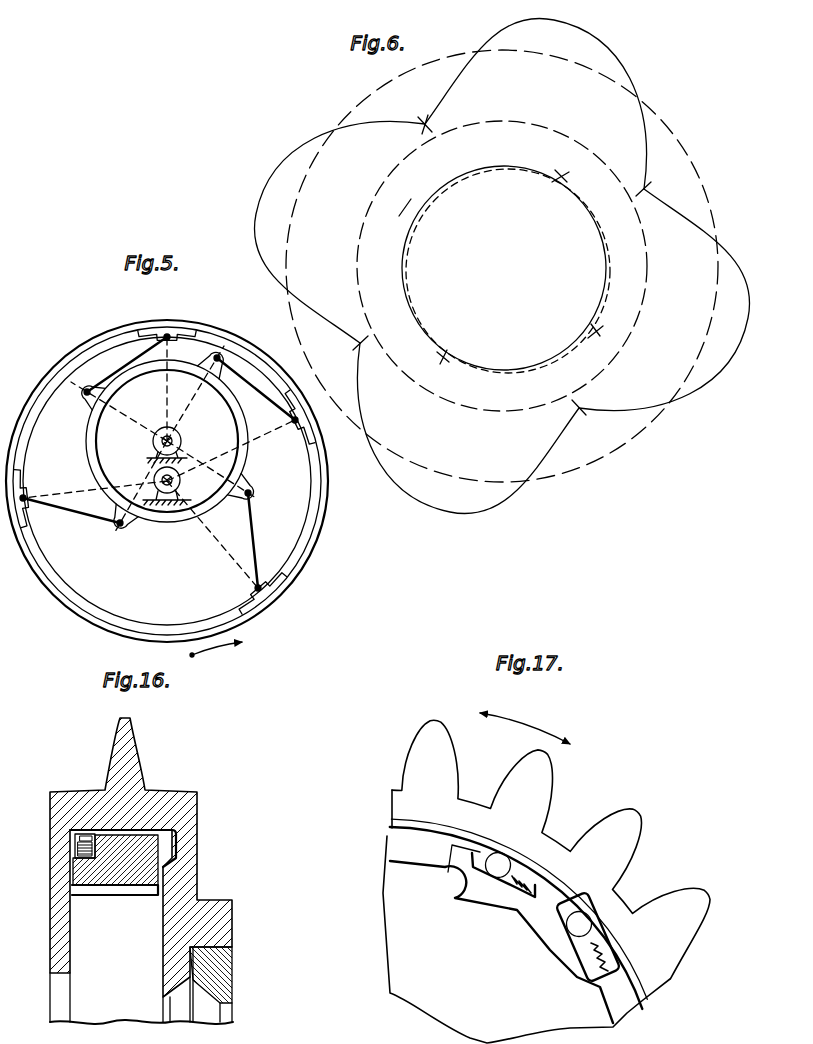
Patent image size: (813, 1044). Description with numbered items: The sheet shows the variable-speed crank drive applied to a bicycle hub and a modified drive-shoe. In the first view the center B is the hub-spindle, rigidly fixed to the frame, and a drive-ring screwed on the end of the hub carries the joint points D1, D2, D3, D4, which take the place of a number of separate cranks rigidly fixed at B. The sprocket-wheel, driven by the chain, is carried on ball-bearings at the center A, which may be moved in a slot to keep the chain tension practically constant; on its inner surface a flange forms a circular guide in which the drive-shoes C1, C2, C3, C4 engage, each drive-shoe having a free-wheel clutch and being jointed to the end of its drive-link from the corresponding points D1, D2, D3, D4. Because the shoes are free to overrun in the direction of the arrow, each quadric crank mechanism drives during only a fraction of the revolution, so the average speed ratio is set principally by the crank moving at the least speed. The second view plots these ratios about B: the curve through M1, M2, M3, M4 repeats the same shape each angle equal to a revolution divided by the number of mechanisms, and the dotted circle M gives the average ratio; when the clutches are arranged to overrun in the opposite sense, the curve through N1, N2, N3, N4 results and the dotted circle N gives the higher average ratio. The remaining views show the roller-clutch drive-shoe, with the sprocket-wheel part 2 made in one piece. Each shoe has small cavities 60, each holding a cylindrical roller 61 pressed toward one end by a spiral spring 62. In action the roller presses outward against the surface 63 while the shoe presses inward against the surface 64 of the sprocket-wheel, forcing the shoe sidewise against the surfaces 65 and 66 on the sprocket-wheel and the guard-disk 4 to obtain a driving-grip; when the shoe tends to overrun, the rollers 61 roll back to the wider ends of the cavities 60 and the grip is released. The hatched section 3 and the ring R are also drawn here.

In FIG. 5, the shaft center A is at (167, 481).
In FIG. 5, the hub-spindle center B is at (167, 441).
In FIG. 6, the hub-spindle center B is at (504, 268).
In FIG. 5, the drive-shoe C1 is at (259, 404).
In FIG. 5, the drive-shoe C2 is at (244, 546).
In FIG. 5, the drive-shoe C3 is at (70, 499).
In FIG. 5, the drive-shoe C4 is at (138, 346).
In FIG. 5, the drive-link joint on drive-ring D1 is at (168, 433).
In FIG. 5, the drive-link joint on drive-ring D2 is at (262, 494).
In FIG. 5, the drive-link joint on drive-ring D3 is at (132, 532).
In FIG. 5, the drive-link joint on drive-ring D4 is at (75, 401).
In FIG. 6, the average speed ratio circle M is at (508, 273).
In FIG. 6, the speed ratio curve point M1 is at (567, 171).
In FIG. 6, the speed ratio curve point M2 is at (403, 210).
In FIG. 6, the speed ratio curve point M3 is at (437, 367).
In FIG. 6, the speed ratio curve point M4 is at (609, 327).
In FIG. 6, the average speed ratio circle N is at (501, 265).
In FIG. 6, the speed ratio curve point N1 is at (353, 350).
In FIG. 6, the speed ratio curve point N2 is at (587, 418).
In FIG. 6, the speed ratio curve point N3 is at (657, 184).
In FIG. 6, the speed ratio curve point N4 is at (421, 120).
In FIG. 16, the sprocket-wheel part 2 is at (197, 900).
In FIG. 16, the shaft bushing 3 is at (220, 968).
In FIG. 16, the guard-disk 4 is at (63, 943).
In FIG. 16, the clutch ring R is at (138, 875).
In FIG. 17, the clutch ring R is at (546, 881).
In FIG. 17, the cavity 60 is at (485, 853).
In FIG. 16, the cylindrical roller 61 is at (77, 845).
In FIG. 17, the cylindrical roller 61 is at (508, 860).
In FIG. 17, the spiral spring 62 is at (514, 880).
In FIG. 16, the sprocket-wheel surface 63 is at (88, 835).
In FIG. 16, the sprocket-wheel surface 64 is at (163, 868).
In FIG. 16, the sprocket-wheel side surface 65 is at (170, 860).
In FIG. 16, the guard-disk side surface 66 is at (72, 836).